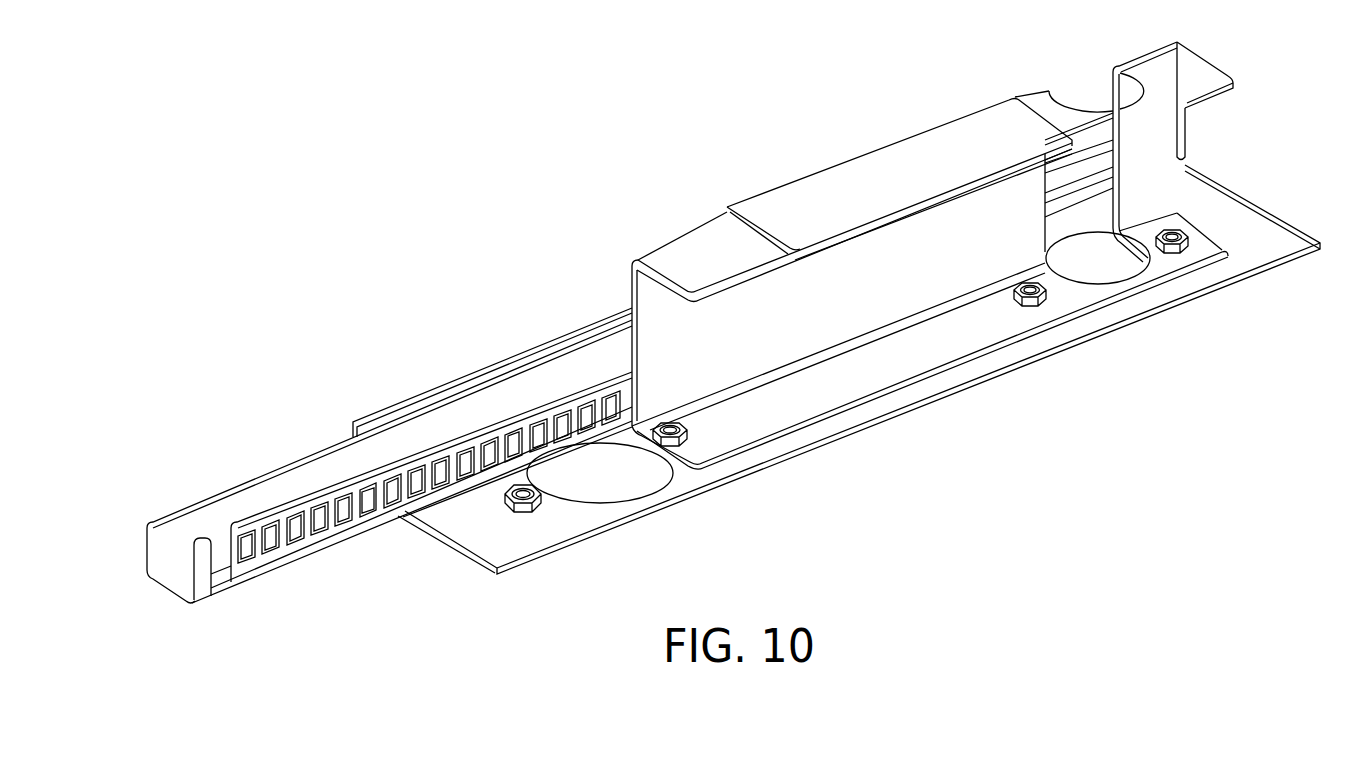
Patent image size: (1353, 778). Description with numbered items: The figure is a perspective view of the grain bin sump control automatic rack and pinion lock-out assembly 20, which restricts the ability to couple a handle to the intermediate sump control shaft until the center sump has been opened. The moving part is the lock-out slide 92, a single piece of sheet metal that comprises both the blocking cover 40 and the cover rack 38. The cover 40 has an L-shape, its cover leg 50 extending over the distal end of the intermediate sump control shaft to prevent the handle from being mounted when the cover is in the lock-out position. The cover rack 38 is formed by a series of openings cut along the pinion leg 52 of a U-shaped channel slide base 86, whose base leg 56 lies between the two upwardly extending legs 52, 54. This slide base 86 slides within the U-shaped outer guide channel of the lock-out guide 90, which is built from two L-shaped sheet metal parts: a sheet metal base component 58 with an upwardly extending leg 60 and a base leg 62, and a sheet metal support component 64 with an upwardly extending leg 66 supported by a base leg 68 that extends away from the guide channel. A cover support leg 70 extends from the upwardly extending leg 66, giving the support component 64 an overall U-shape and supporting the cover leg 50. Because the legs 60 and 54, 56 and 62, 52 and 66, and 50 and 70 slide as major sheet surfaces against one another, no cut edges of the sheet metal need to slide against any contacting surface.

The grain bin sump control automatic rack and pinion lock-out assembly 20 is at (697, 98).
The cover rack 38 is at (405, 500).
The intermediate control shaft cover 40 is at (885, 137).
The cover leg 50 is at (834, 190).
The pinion leg 52 is at (208, 556).
The upwardly extending leg 54 is at (162, 537).
The base leg 56 is at (203, 553).
The sheet metal base component 58 is at (1265, 226).
The upwardly extending leg 60 is at (497, 368).
The base leg 62 is at (1098, 222).
The sheet metal support component 64 is at (693, 230).
The upwardly extending leg 66 is at (1152, 173).
The base leg 68 is at (862, 376).
The cover support leg 70 is at (678, 258).
The U-shaped channel slide base 86 is at (168, 582).
The lock-out guide 90 is at (1190, 326).
The lock-out slide 92 is at (947, 98).